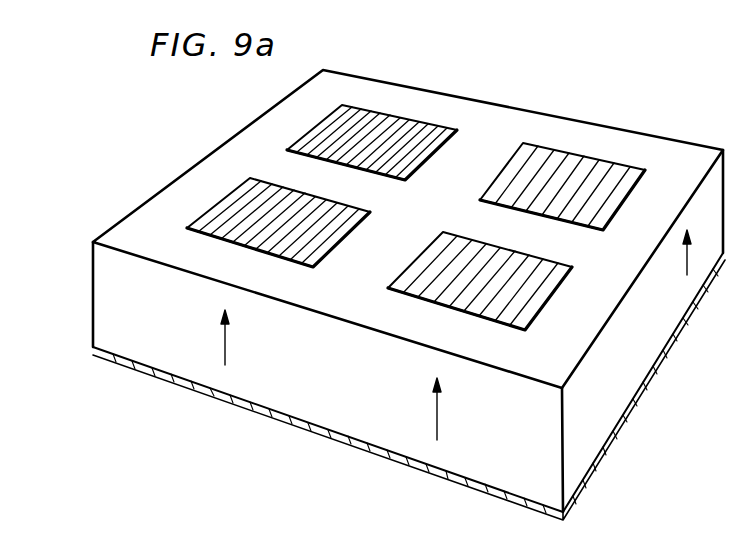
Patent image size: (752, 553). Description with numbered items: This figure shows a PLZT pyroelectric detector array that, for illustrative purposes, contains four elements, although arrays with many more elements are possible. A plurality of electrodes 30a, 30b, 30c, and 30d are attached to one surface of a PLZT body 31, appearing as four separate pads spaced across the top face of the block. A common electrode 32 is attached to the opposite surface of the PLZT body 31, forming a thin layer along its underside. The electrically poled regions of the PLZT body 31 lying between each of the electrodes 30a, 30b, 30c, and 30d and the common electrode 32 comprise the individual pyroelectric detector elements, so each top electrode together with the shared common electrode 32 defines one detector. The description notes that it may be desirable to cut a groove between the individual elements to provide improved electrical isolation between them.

The electrode 30a is at (263, 212).
The electrode 30b is at (373, 130).
The electrode 30c is at (457, 273).
The electrode 30d is at (563, 170).
The PLZT body 31 is at (113, 297).
The common electrode 32 is at (463, 480).